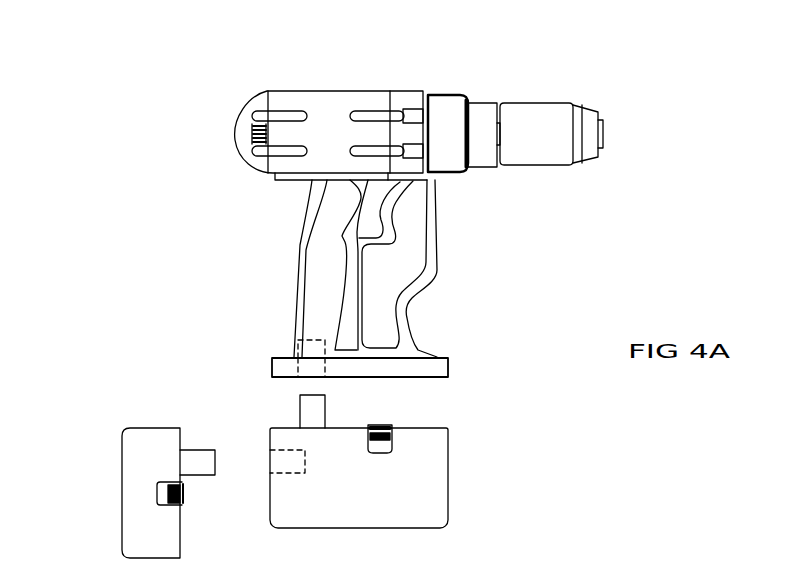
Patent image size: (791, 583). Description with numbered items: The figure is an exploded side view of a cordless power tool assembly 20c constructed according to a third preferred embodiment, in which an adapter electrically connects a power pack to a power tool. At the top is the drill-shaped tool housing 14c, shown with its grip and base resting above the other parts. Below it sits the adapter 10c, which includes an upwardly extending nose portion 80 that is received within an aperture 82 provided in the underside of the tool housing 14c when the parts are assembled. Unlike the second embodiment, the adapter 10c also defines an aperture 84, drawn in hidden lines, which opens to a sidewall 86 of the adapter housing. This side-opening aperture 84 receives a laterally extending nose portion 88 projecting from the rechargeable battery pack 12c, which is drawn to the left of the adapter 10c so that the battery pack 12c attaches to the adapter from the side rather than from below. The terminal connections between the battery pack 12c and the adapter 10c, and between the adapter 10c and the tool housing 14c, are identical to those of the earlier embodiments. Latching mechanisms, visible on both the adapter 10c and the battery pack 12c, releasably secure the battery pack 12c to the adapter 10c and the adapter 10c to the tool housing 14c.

The cordless power tool assembly 20c is at (214, 101).
The tool housing 14c is at (330, 87).
The adapter 10c is at (451, 481).
The rechargeable battery pack 12c is at (117, 481).
The nose portion 80 is at (300, 400).
The aperture 82 is at (296, 356).
The aperture 84 is at (288, 474).
The sidewall 86 is at (270, 442).
The nose portion 88 is at (197, 450).